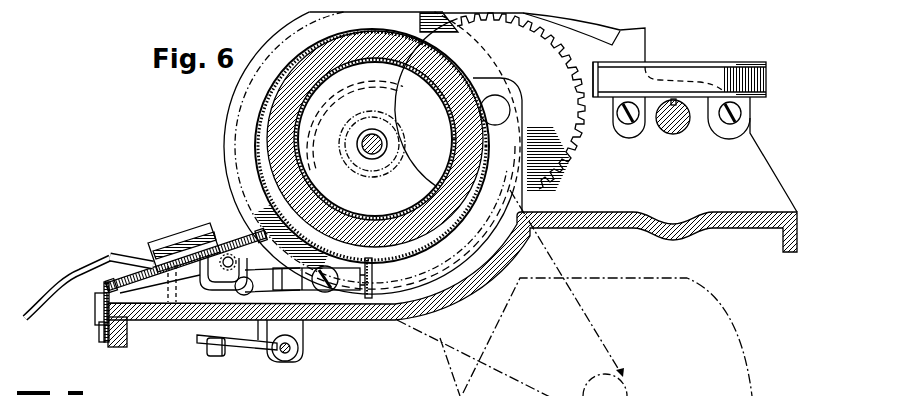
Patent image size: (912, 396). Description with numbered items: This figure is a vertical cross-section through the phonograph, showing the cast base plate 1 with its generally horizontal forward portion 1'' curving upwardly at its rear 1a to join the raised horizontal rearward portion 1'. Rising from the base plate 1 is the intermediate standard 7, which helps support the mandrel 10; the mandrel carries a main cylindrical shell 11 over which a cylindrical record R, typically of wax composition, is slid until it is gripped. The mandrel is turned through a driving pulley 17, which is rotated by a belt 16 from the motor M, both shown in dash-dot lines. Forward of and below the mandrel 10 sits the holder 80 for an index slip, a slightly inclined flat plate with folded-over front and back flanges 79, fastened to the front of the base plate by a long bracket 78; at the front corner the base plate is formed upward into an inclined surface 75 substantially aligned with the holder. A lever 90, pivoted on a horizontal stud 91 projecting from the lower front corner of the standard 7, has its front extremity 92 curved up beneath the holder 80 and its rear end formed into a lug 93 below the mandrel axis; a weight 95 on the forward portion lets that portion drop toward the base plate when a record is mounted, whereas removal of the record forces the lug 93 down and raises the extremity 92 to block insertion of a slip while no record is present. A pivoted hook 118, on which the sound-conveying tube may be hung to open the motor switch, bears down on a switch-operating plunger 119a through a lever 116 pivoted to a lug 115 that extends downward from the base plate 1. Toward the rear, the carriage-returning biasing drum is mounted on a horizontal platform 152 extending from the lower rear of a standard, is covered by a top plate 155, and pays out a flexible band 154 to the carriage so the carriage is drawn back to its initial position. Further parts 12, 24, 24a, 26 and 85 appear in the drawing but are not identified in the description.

The base plate 1 is at (452, 232).
The rearward portion of base plate 1' is at (603, 200).
The forward portion of base plate 1'' is at (182, 335).
The rear of forward portion 1a is at (495, 258).
The intermediate standard 7 is at (485, 222).
The mandrel 10 is at (293, 147).
The record R is at (265, 168).
The main cylindrical shell 11 is at (323, 197).
The spacing dimension 12 is at (588, 62).
The belt 16 is at (574, 293).
The driving pulley 17 is at (237, 128).
The roller 24 is at (687, 131).
The roller 24a is at (663, 133).
The gear 26 is at (405, 128).
The inclined surface 75 is at (143, 292).
The bracket 78 is at (132, 318).
The flanges 79 is at (113, 280).
The holder 80 is at (103, 288).
The member 85 is at (226, 392).
The lever 90 is at (302, 291).
The stud 91 is at (337, 292).
The front lever extremity 92 is at (197, 268).
The lug 93 is at (372, 279).
The weight 95 is at (254, 322).
The lug 115 is at (303, 355).
The lever 116 is at (276, 362).
The hook 118 is at (80, 272).
The switch-operating plunger 119a is at (228, 354).
The platform 152 is at (747, 103).
The flexible band 154 is at (610, 77).
The top plate 155 is at (718, 54).
The motor M is at (457, 391).